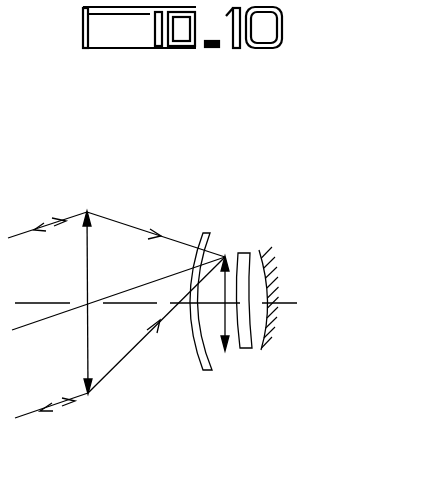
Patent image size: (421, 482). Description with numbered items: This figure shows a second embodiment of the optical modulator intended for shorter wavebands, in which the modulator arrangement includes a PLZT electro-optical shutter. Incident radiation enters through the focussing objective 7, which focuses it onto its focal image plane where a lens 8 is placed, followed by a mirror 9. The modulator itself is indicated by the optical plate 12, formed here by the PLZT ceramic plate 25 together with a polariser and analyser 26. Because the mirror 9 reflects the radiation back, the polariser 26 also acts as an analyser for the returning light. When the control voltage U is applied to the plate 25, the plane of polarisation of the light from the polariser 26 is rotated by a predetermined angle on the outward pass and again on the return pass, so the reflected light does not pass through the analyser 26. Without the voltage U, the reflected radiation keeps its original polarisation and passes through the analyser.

The focussing objective 7 is at (86, 258).
The lens 8 is at (225, 316).
The mirror 9 is at (259, 254).
The parallel faced optical plate 12 is at (221, 342).
The plate 25 is at (254, 332).
The polariser and analyser 26 is at (210, 372).
The control voltage U is at (263, 219).